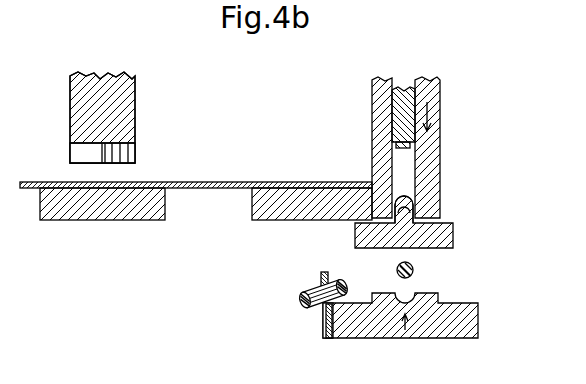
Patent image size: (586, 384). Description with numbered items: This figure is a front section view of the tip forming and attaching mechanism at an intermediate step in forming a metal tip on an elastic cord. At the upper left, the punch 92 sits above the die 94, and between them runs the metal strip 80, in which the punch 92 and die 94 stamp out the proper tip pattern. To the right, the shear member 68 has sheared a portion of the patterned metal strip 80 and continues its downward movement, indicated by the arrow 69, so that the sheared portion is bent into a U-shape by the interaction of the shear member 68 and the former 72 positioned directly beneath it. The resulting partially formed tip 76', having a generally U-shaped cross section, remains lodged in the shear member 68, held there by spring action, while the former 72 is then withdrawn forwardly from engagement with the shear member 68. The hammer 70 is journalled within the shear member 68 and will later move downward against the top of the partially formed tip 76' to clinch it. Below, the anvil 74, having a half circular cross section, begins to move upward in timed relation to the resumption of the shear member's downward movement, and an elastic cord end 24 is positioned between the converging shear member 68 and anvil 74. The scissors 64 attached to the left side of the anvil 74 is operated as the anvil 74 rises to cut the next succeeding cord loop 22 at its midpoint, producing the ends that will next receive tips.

The cord loop 22 is at (307, 288).
The elastic cord end 24 is at (414, 270).
The scissors 64 is at (322, 277).
The shear member 68 is at (440, 161).
The arrow 69 is at (440, 118).
The hammer 70 is at (412, 97).
The former 72 is at (453, 233).
The anvil 74 is at (478, 318).
The partially formed tip 76' is at (441, 203).
The metal strip 80 is at (23, 182).
The punch 92 is at (135, 123).
The die 94 is at (153, 218).